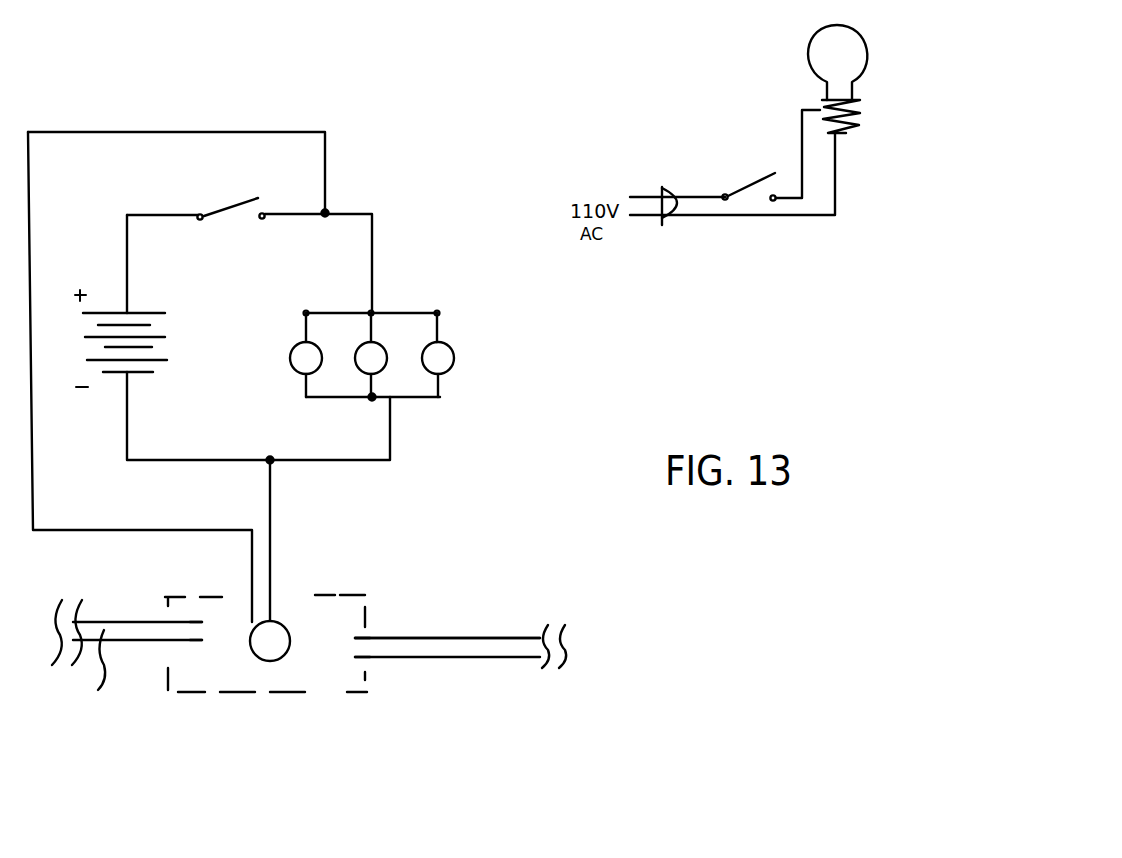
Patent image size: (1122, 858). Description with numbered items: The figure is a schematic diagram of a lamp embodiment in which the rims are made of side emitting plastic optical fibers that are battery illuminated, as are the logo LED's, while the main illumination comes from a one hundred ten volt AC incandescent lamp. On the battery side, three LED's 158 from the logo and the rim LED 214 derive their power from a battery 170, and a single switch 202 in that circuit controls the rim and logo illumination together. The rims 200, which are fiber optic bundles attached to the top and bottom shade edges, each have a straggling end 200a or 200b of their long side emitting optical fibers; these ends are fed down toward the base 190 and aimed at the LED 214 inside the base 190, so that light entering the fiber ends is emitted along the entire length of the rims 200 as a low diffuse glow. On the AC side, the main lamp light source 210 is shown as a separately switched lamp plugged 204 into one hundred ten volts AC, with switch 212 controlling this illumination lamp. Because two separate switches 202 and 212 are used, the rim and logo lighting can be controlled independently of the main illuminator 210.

The LED's 158 is at (388, 344).
The battery 170 is at (151, 301).
The base 190 is at (380, 617).
The rims 200 is at (498, 677).
The straggling end 200a is at (362, 648).
The straggling end 200b is at (193, 629).
The switch 202 is at (284, 242).
The plug 204 is at (652, 228).
The main lamp light source 210 is at (862, 79).
The switch 212 is at (771, 155).
The rim LED 214 is at (299, 627).